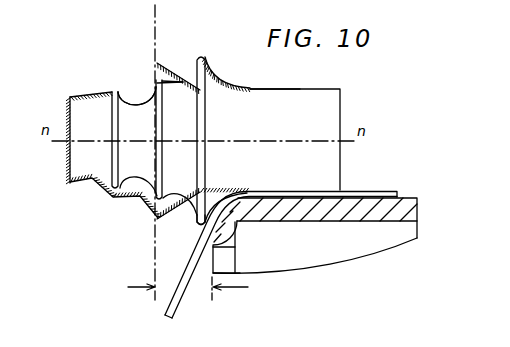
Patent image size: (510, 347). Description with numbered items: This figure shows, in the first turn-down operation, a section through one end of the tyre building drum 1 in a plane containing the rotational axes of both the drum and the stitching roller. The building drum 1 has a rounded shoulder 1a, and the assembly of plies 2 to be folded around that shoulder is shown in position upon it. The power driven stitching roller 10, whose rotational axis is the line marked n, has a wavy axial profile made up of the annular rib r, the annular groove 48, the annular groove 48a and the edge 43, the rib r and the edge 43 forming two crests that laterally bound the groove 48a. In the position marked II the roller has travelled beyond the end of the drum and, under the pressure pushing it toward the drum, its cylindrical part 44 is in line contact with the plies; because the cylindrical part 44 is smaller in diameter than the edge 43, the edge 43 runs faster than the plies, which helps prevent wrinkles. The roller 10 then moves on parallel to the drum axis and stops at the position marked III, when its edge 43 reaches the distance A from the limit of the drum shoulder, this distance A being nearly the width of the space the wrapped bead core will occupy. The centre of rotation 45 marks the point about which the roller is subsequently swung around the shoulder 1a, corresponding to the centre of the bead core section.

The building drum 1 is at (327, 210).
The rounded shoulder of the drum 1a is at (237, 224).
The assembly of plies 2 is at (356, 192).
The power driven stitching roller 10 is at (325, 105).
The edge of the roller 43 is at (223, 133).
The cylindrical part of the roller 44 is at (303, 86).
The centre of rotation 45 is at (185, 249).
The annular groove 48 is at (142, 203).
The annular groove 48a is at (196, 81).
The annular rib r is at (160, 123).
The position II is at (222, 76).
The position III is at (100, 183).
The distance A is at (188, 288).